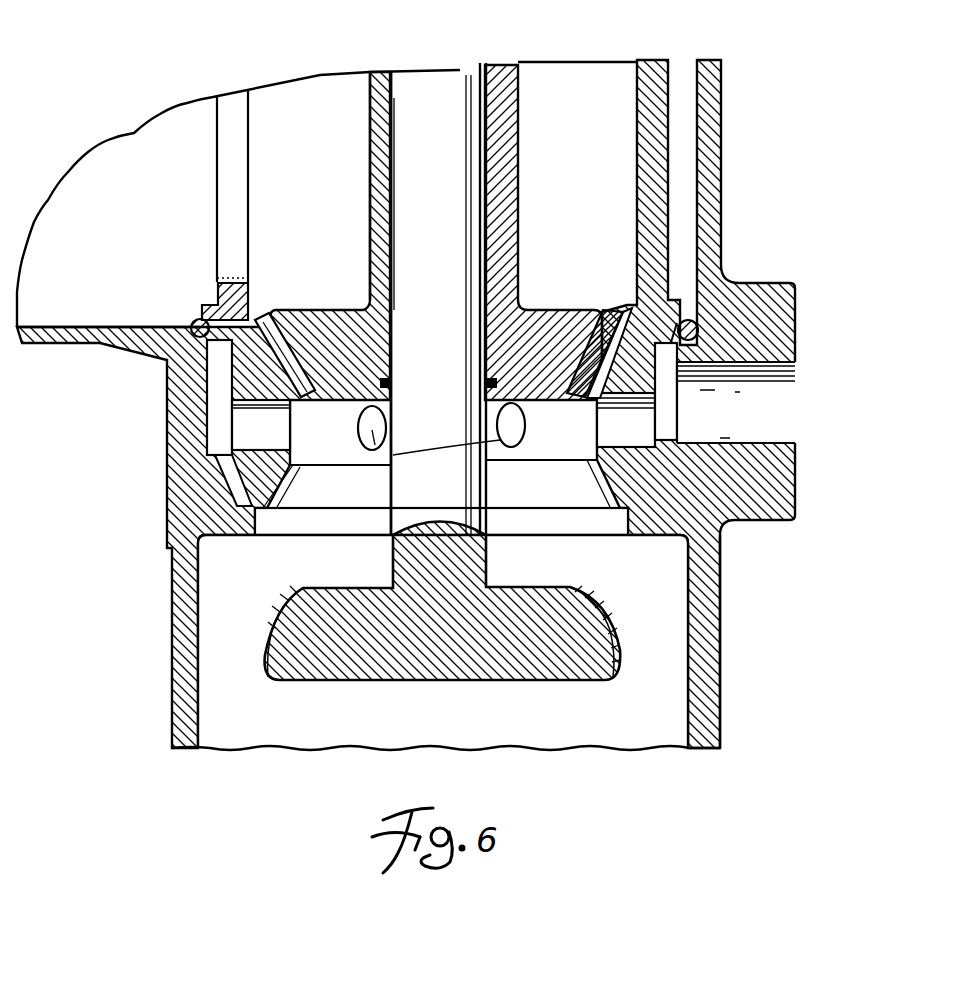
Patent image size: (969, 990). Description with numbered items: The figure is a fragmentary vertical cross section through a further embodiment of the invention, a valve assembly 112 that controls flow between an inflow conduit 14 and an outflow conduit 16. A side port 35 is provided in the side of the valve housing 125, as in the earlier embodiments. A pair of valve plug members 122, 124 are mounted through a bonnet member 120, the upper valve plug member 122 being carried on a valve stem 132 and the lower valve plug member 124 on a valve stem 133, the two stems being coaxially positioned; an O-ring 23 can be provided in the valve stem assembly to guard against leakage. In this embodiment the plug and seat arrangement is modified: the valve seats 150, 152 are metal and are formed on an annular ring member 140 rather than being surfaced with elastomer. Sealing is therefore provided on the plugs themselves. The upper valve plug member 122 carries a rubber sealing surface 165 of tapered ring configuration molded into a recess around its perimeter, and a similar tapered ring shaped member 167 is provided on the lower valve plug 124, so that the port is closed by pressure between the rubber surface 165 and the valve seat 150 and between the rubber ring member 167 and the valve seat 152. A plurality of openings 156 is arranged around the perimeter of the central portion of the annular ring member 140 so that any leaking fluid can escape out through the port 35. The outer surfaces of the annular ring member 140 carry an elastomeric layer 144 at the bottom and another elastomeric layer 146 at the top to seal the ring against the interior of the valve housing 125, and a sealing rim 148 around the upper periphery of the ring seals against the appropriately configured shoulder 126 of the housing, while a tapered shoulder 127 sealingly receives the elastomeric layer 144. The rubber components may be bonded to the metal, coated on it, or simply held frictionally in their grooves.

The inflow conduit 14 is at (122, 143).
The outflow conduit 16 is at (660, 710).
The O-ring 23 is at (500, 374).
The side port 35 is at (757, 400).
The valve assembly 112 is at (742, 86).
The bonnet member 120 is at (222, 120).
The valve plug member 122 is at (505, 213).
The valve plug member 124 is at (443, 643).
The valve housing 125 is at (168, 405).
The shoulder 126 is at (698, 333).
The tapered shoulder 127 is at (667, 480).
The valve stem 132 is at (378, 72).
The valve stem 133 is at (452, 85).
The annular ring member 140 is at (257, 395).
The elastomeric layer 144 is at (240, 480).
The elastomeric layer 146 is at (268, 310).
The sealing rim 148 is at (195, 320).
The valve seat 150 is at (245, 338).
The valve seat 152 is at (523, 487).
The openings 156 is at (272, 438).
The rubber sealing surface 165 is at (604, 310).
The tapered ring shaped member 167 is at (607, 618).